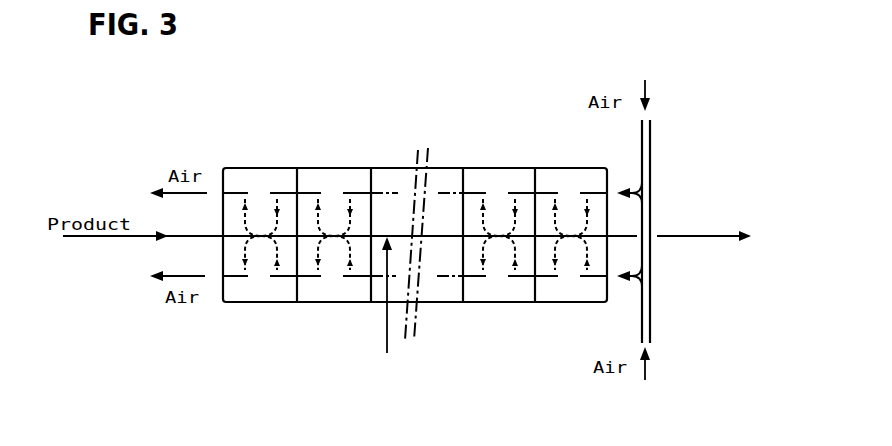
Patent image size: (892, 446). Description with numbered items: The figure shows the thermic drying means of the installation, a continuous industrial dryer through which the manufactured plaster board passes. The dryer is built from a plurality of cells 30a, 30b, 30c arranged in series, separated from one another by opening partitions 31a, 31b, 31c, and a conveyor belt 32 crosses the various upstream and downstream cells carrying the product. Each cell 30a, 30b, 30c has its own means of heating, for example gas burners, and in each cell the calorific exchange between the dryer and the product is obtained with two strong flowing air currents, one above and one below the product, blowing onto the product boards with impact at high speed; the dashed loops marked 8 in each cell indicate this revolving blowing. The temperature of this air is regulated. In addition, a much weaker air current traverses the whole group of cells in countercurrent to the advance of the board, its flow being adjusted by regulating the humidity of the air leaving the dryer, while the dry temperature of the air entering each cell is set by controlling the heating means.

The air nozzle 8 is at (416, 235).
The cell 30a is at (242, 182).
The cell 30b is at (348, 182).
The cell 30c is at (437, 182).
The opening partition 31a is at (292, 178).
The opening partition 31b is at (379, 177).
The opening partition 31c is at (470, 177).
The conveyor belt 32 is at (387, 313).